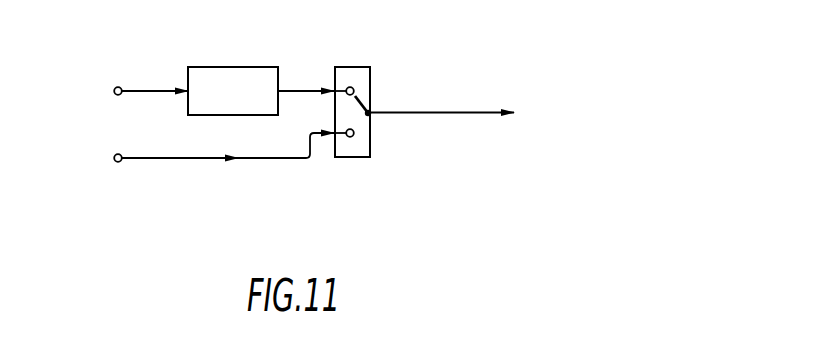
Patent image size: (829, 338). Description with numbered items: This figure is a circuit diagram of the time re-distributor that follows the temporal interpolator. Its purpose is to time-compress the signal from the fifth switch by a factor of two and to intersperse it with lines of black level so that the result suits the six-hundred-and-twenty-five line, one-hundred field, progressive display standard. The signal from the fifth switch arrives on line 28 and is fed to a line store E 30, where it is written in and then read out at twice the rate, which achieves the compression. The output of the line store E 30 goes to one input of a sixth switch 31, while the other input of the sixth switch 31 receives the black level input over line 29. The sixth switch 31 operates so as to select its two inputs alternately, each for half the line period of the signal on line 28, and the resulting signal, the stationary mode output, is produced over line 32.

The line 28 is at (143, 90).
The line 29 is at (157, 157).
The line store E 30 is at (278, 67).
The switch S6 31 is at (370, 67).
The line 32 is at (422, 113).